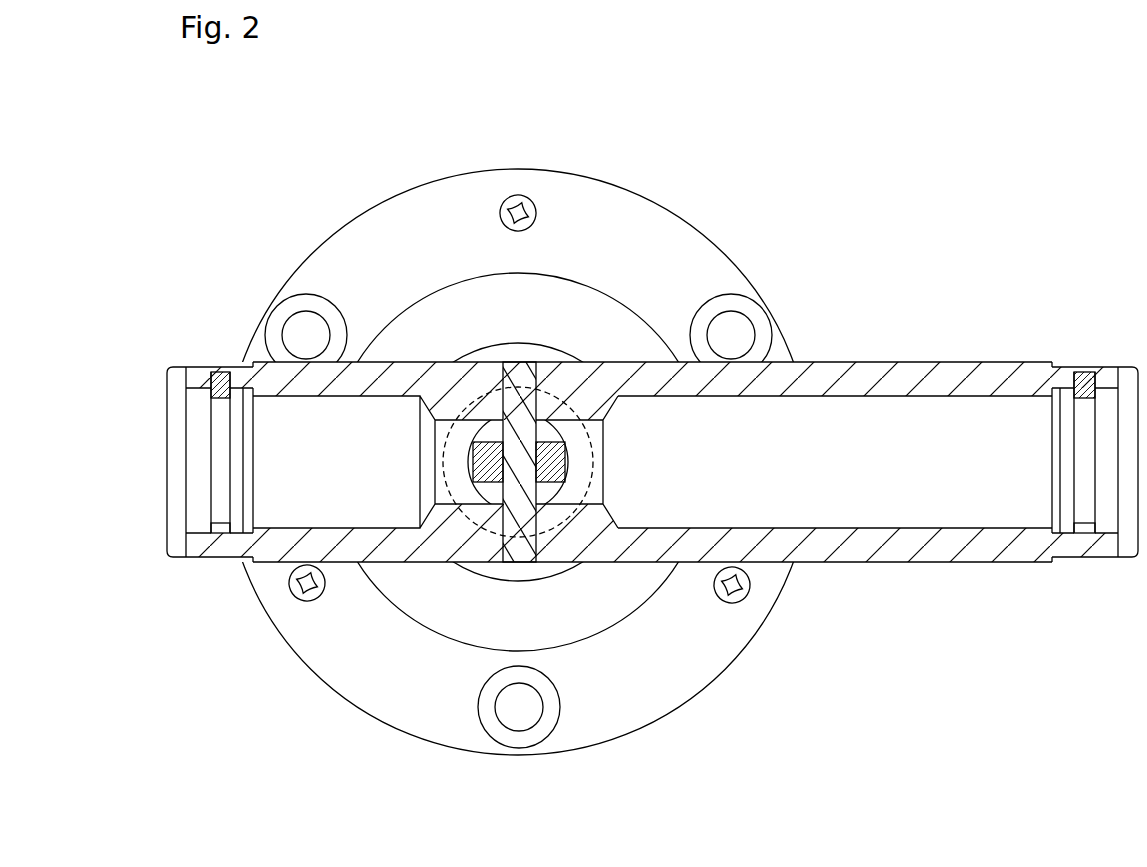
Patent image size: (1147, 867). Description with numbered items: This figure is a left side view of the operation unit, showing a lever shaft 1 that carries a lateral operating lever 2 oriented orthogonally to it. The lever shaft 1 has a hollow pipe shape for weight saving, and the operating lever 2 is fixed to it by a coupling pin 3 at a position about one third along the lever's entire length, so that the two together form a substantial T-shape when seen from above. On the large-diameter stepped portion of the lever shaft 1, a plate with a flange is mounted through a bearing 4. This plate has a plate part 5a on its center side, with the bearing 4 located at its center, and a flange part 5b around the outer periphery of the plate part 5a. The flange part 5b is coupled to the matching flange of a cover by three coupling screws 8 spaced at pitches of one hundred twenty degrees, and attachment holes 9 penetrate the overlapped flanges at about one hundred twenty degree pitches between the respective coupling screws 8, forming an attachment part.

The lever shaft 1 is at (550, 515).
The operating lever 2 is at (843, 356).
The coupling pin 3 is at (513, 395).
The bearing 4 is at (490, 578).
The plate part 5a is at (450, 313).
The flange part 5b is at (353, 248).
The coupling screws 8 is at (531, 197).
The attachment holes 9 is at (300, 318).